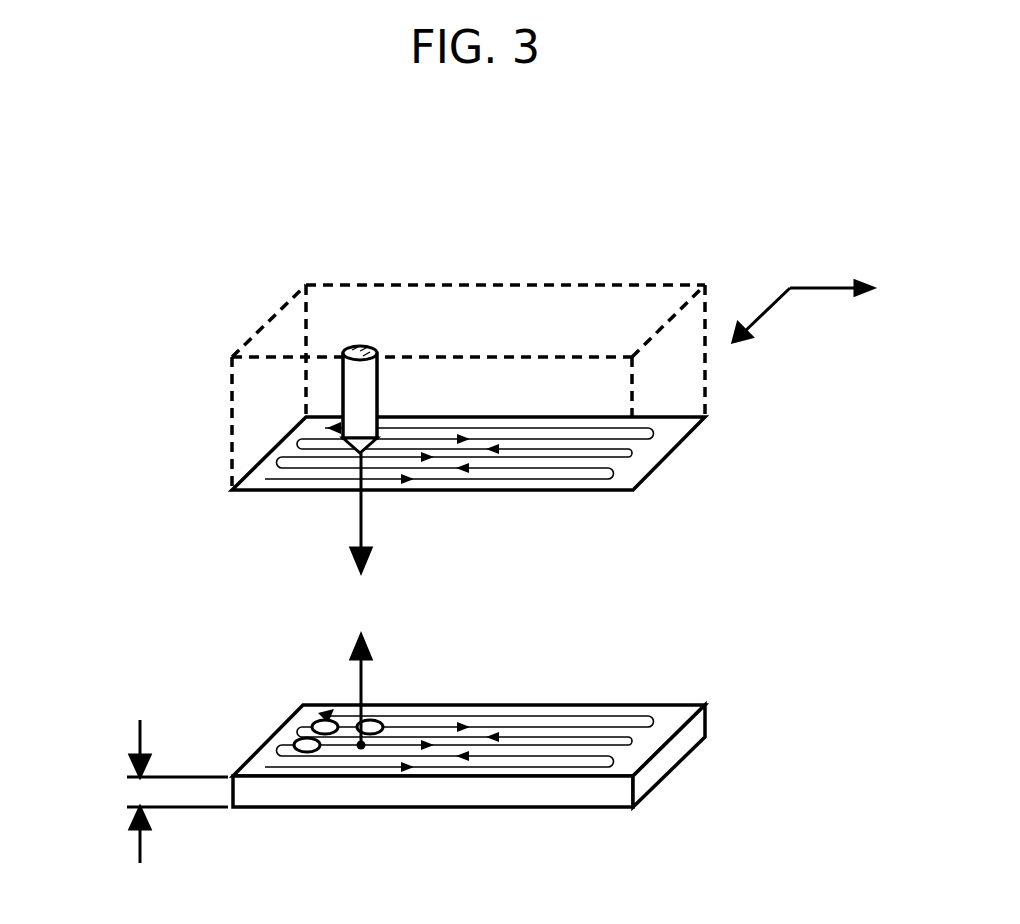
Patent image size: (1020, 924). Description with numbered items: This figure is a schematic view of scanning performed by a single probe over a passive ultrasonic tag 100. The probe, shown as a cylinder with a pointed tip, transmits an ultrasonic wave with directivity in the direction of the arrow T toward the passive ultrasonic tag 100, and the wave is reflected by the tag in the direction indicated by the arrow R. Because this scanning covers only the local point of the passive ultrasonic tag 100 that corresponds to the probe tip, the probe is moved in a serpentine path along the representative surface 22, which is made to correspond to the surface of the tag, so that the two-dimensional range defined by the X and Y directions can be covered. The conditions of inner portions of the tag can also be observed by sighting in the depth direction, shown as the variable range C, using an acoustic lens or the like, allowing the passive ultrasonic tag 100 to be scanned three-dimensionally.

The representative surface 22 is at (650, 457).
The passive ultrasonic tag 100 is at (676, 713).
The ultrasonic wave transmission direction T is at (345, 512).
The reflected ultrasonic wave direction R is at (346, 690).
The X direction X is at (843, 293).
The Y direction Y is at (752, 332).
The depth direction sighting range C is at (143, 788).